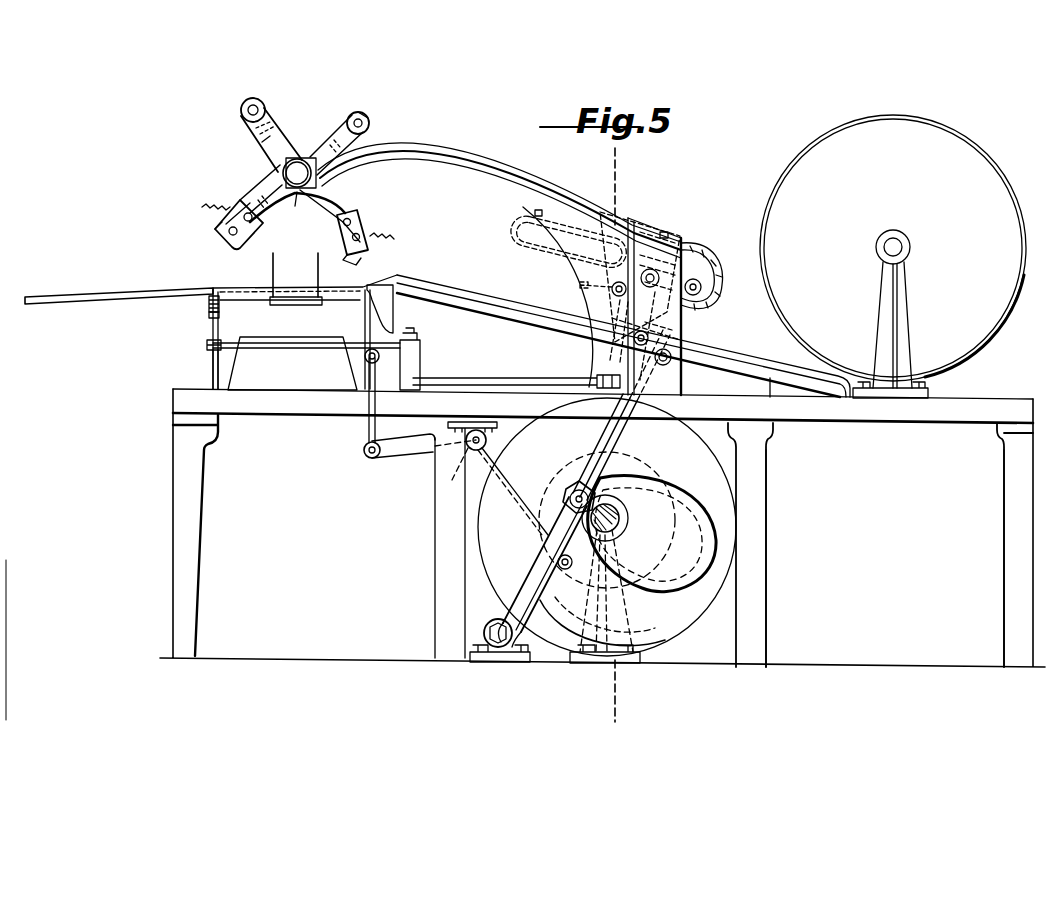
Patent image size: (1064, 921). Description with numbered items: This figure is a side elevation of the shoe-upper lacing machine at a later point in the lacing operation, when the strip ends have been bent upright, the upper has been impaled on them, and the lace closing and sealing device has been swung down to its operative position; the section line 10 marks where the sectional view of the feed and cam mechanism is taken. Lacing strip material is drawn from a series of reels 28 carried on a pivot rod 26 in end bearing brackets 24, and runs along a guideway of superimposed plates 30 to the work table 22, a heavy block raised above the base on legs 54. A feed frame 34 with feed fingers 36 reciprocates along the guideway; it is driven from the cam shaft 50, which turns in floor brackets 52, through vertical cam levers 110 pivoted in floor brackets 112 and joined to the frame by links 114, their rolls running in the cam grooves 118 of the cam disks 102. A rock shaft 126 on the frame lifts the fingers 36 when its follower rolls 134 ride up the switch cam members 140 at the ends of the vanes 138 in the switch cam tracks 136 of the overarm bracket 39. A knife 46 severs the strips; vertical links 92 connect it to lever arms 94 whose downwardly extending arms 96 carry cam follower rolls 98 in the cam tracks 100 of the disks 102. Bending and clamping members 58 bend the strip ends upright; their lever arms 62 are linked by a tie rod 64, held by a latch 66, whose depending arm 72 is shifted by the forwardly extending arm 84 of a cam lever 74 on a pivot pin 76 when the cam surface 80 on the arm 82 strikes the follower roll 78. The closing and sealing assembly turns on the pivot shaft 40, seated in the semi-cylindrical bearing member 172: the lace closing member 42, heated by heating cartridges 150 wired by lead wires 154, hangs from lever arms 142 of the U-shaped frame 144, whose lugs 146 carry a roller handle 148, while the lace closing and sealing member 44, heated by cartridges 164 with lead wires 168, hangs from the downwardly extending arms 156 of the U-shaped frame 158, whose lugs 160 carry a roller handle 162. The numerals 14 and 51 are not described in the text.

The section line 10— 10 is at (608, 179).
The feed tray 14 is at (128, 296).
The work table 22 is at (238, 295).
The end bearing bracket 24 is at (882, 297).
The pivot rod 26 is at (884, 247).
The reel 28 is at (893, 248).
The guideway plate 30 is at (455, 305).
The feed frame 34 is at (680, 316).
The feed finger 36 is at (632, 318).
The overarm bracket 39 is at (482, 176).
The pivot shaft 40 is at (298, 160).
The lace closing member 42 is at (356, 265).
The lace closing and sealing member 44 is at (222, 244).
The knife 46 is at (370, 300).
The cam shaft 50 is at (612, 517).
The post 51 is at (273, 298).
The floor bracket 52 is at (615, 660).
The leg 54 is at (245, 382).
The bending and clamping member 58 is at (304, 305).
The lever arm 62 is at (208, 301).
The tie rod 64 is at (206, 345).
The latch 66 is at (208, 315).
The depending arm 72 is at (212, 355).
The cam lever 74 is at (482, 380).
The pivot pin 76 is at (422, 352).
The follower roll 78 is at (600, 418).
The cam surface 80 is at (660, 642).
The arm 82 is at (670, 622).
The forwardly extending arm 84 is at (295, 348).
The vertical link 92 is at (367, 432).
The lever arm 94 is at (402, 450).
The downwardly extending arm 96 is at (468, 452).
The cam follower roll 98 is at (542, 572).
The cam track 100 is at (665, 478).
The cam disk 102 is at (725, 524).
The cam lever 110 is at (628, 434).
The floor bracket 112 is at (488, 656).
The link 114 is at (672, 336).
The cam groove 118 is at (706, 520).
The rock shaft 126 is at (602, 294).
The follower roll 134 is at (702, 287).
The switch cam track 136 is at (712, 262).
The vane 138 is at (668, 238).
The switch cam member 140 is at (578, 250).
The lever arm 142 is at (343, 212).
The U-shaped frame 144 is at (258, 142).
The lug 146 is at (262, 130).
The roller handle 148 is at (250, 98).
The heating cartridge 150 is at (372, 236).
The lead wire 154 is at (398, 234).
The downwardly extending arm 156 is at (268, 196).
The U-shaped frame 158 is at (328, 140).
The lug 160 is at (372, 104).
The roller handle 162 is at (368, 126).
The heating cartridge 164 is at (214, 216).
The lead wire 168 is at (206, 203).
The semi-cylindrical bearing member 172 is at (297, 200).